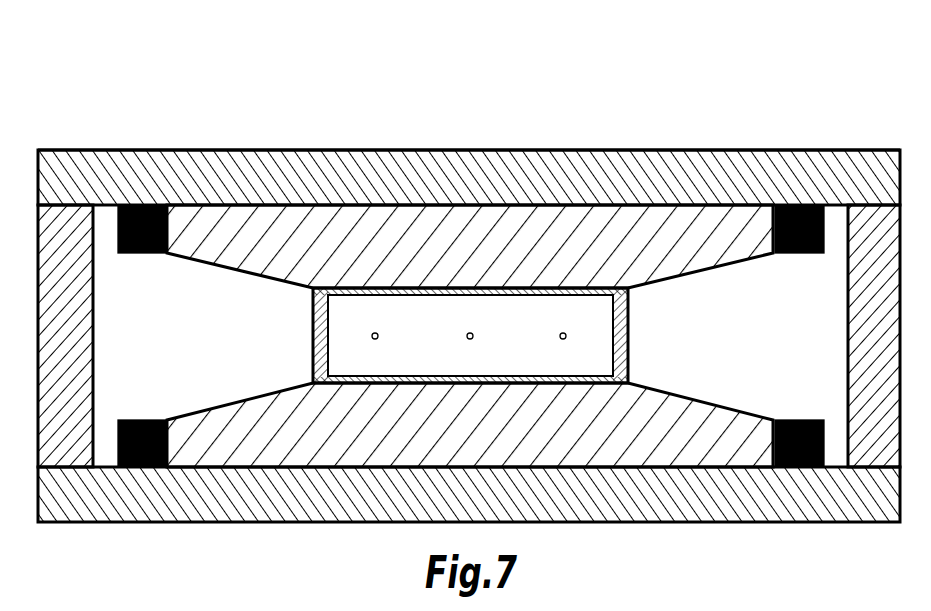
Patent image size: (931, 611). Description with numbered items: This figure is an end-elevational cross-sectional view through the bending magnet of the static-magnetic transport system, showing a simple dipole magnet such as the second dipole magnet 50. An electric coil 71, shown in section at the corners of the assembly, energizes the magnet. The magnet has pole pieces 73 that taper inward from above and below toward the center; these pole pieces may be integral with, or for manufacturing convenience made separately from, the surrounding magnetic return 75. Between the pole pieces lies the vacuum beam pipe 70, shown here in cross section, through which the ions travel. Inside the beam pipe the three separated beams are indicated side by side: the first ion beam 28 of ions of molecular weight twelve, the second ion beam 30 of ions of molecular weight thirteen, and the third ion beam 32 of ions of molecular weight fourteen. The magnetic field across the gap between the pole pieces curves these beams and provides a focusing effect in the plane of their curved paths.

The second dipole magnet 50 is at (500, 205).
The magnetic return 75 is at (665, 150).
The electric coil 71 is at (150, 206).
The pole pieces 73 is at (688, 274).
The vacuum beam pipe 70 is at (312, 337).
The third ion beam 32 is at (375, 332).
The second ion beam 30 is at (470, 332).
The first ion beam 28 is at (563, 332).